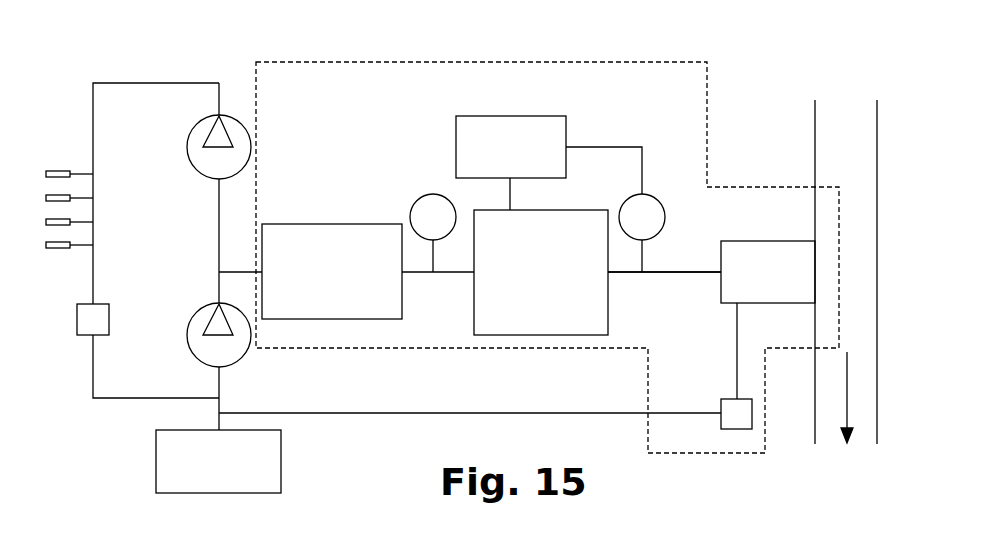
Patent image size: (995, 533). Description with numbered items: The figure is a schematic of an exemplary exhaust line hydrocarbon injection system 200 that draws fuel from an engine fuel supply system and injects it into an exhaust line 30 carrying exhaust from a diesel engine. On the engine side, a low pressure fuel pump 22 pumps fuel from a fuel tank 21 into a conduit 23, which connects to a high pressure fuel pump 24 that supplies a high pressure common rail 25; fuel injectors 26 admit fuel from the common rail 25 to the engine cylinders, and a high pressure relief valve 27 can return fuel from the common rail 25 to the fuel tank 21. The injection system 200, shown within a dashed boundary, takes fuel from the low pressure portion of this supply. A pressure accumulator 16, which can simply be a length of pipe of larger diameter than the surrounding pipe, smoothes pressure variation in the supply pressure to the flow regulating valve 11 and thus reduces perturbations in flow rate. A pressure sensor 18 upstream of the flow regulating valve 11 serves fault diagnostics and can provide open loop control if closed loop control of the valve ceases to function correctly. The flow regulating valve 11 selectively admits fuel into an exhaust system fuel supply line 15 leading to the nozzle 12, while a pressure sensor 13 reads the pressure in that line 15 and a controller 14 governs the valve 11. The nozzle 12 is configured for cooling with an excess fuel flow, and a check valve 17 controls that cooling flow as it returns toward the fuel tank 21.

The exhaust line hydrocarbon injection system 200 is at (405, 60).
The flow regulating valve 11 is at (555, 208).
The nozzle 12 is at (773, 250).
The pressure sensor 13 is at (650, 196).
The controller 14 is at (453, 122).
The exhaust system fuel supply line 15 is at (632, 273).
The pressure accumulator 16 is at (367, 224).
The check valve 17 is at (728, 404).
The pressure sensor 18 is at (424, 198).
The fuel tank 21 is at (275, 450).
The low pressure fuel pump 22 is at (238, 343).
The conduit 23 is at (218, 289).
The high pressure fuel pump 24 is at (237, 130).
The high pressure common rail 25 is at (183, 82).
The fuel injectors 26 is at (53, 172).
The high pressure relief valve 27 is at (103, 312).
The exhaust line 30 is at (814, 150).